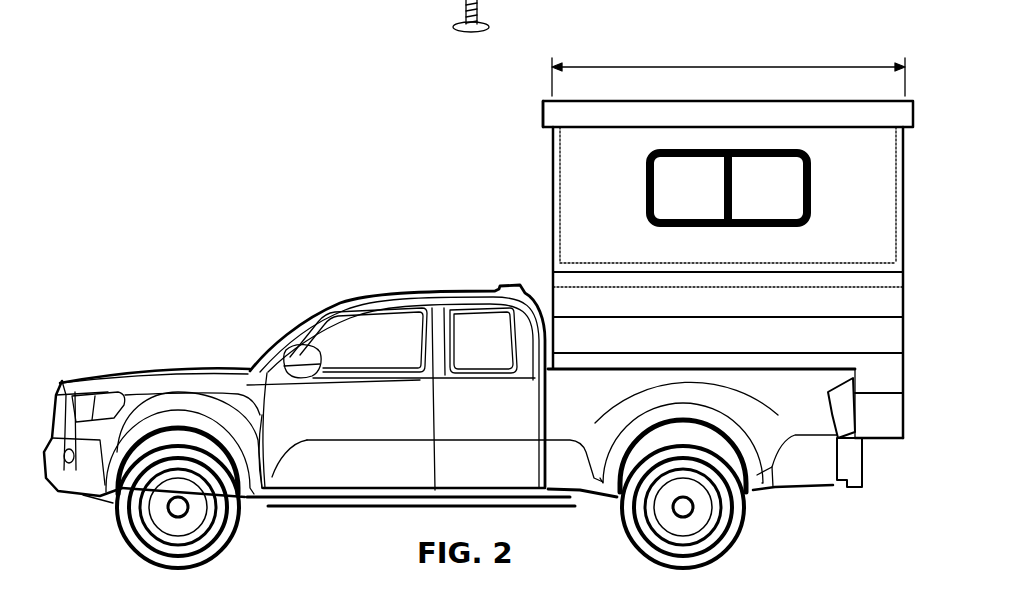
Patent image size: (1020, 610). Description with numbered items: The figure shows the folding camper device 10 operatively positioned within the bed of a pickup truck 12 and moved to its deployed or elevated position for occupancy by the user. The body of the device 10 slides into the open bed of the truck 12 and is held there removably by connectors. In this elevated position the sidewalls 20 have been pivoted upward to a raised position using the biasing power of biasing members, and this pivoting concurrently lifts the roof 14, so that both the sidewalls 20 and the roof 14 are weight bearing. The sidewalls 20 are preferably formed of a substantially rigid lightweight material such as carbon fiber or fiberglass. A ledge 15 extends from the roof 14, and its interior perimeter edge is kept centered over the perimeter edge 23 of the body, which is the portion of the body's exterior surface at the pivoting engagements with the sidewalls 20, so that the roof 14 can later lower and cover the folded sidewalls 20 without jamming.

The folding camper device 10 is at (553, 205).
The pickup truck 12 is at (343, 305).
The roof 14 is at (715, 110).
The ledge 15 is at (568, 115).
The sidewalls 20 is at (610, 228).
The perimeter edge 23 is at (868, 303).